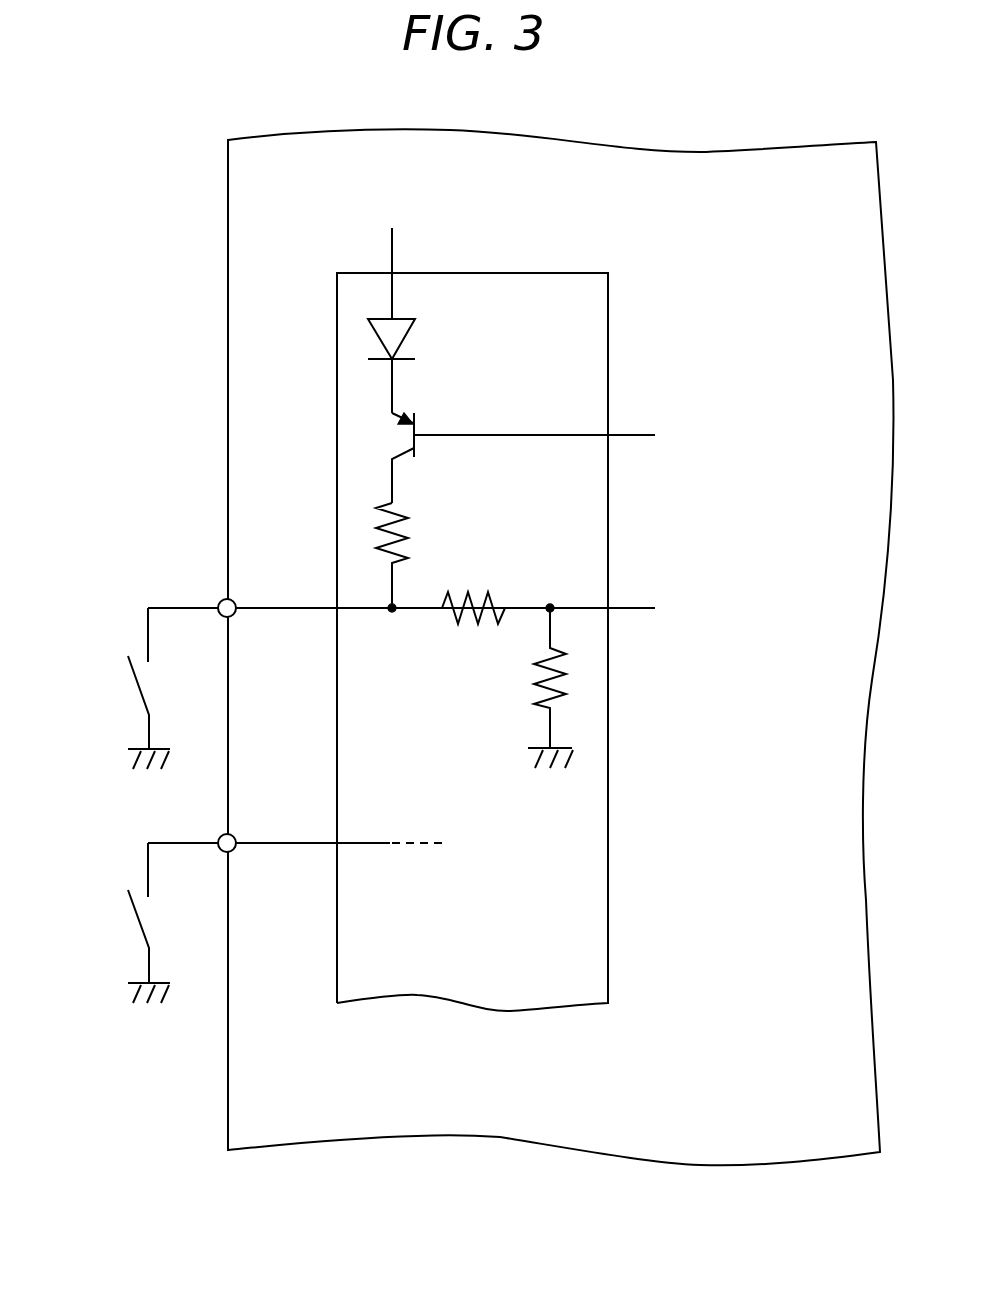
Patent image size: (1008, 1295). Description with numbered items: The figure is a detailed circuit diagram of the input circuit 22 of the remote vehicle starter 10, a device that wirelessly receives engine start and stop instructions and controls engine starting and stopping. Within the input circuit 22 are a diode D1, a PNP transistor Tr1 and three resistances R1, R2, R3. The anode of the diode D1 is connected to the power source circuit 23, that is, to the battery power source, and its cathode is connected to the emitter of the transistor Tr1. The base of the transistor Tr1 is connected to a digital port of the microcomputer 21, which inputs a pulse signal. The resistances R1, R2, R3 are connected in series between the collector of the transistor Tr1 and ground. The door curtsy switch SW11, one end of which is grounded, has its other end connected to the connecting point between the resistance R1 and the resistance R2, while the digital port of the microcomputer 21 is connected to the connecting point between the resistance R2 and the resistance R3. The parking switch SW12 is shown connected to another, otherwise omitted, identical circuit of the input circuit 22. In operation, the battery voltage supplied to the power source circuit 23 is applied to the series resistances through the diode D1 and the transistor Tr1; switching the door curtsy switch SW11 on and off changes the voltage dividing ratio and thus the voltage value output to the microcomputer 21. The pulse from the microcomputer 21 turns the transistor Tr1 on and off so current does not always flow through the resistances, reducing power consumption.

The remote vehicle starter 10 is at (742, 151).
The input circuit 22 is at (545, 271).
The power source circuit 23 is at (390, 248).
The microcomputer 21 is at (728, 523).
The diode D1 is at (411, 366).
The transistor Tr1 is at (523, 452).
The resistance R1 is at (414, 555).
The resistance R2 is at (473, 594).
The resistance R3 is at (535, 688).
The door curtsy switch SW11 is at (137, 689).
The parking switch SW12 is at (137, 924).